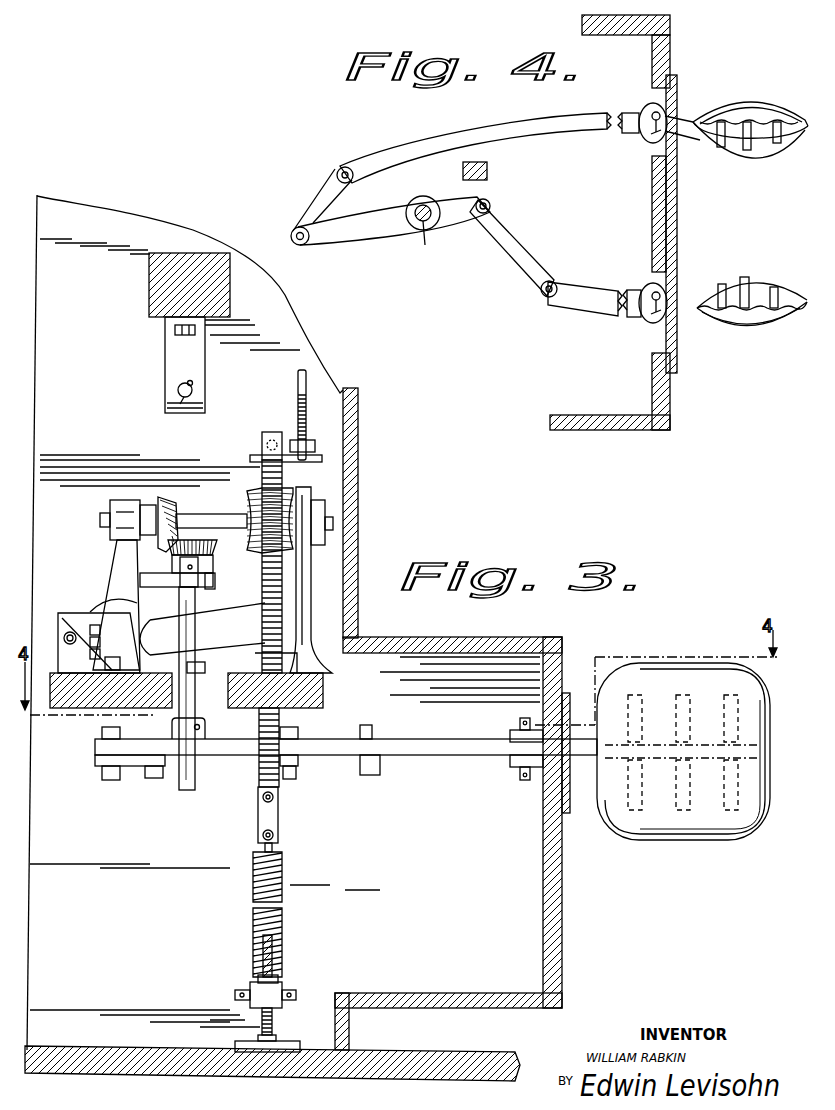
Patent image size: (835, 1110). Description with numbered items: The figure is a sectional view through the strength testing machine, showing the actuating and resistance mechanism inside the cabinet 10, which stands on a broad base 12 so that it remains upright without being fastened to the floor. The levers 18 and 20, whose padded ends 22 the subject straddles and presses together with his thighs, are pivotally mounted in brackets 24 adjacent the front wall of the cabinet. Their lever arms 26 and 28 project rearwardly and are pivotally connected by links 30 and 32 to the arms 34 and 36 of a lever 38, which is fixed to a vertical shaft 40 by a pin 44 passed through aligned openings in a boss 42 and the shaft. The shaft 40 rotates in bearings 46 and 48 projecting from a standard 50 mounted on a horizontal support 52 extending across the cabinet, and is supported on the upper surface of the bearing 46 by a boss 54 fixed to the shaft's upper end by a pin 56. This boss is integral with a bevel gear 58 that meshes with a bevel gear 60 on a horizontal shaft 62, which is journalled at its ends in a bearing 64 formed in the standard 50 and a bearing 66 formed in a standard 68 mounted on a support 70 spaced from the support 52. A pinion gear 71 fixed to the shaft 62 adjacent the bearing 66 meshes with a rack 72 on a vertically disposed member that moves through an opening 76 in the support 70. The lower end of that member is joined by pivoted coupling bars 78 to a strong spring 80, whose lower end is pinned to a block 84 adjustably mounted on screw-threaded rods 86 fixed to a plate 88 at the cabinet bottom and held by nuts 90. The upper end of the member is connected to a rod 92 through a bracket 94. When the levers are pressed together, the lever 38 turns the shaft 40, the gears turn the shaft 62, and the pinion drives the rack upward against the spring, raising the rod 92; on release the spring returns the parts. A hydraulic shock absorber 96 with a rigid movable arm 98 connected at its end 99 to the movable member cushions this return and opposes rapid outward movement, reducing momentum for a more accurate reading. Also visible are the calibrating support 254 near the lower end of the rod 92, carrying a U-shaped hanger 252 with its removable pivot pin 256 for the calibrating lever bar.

In FIG. 4, the cabinet 10 is at (632, 430).
In FIG. 3, the cabinet 10 is at (358, 437).
In FIG. 3, the base 12 is at (510, 1050).
In FIG. 4, the lever 18 is at (760, 286).
In FIG. 4, the lever 20 is at (760, 150).
In FIG. 4, the padded end 22 is at (757, 108).
In FIG. 3, the padded end 22 is at (725, 820).
In FIG. 4, the bracket 24 is at (648, 142).
In FIG. 3, the bracket 24 is at (510, 736).
In FIG. 4, the lever arm 26 is at (606, 312).
In FIG. 3, the lever arm 26 is at (420, 739).
In FIG. 4, the lever arm 28 is at (590, 126).
In FIG. 3, the lever arm 28 is at (340, 742).
In FIG. 4, the link 30 is at (518, 250).
In FIG. 3, the link 30 is at (338, 760).
In FIG. 4, the link 32 is at (322, 198).
In FIG. 3, the link 32 is at (97, 763).
In FIG. 4, the arm 34 is at (458, 214).
In FIG. 3, the arm 34 is at (234, 756).
In FIG. 4, the arm 36 is at (337, 240).
In FIG. 3, the arm 36 is at (137, 756).
In FIG. 4, the lever 38 is at (390, 240).
In FIG. 3, the lever 38 is at (95, 746).
In FIG. 4, the vertical shaft 40 is at (429, 242).
In FIG. 3, the vertical shaft 40 is at (186, 791).
In FIG. 4, the boss 42 is at (430, 203).
In FIG. 3, the boss 42 is at (206, 730).
In FIG. 4, the pin 44 is at (415, 207).
In FIG. 3, the pin 44 is at (197, 737).
In FIG. 3, the bearing 46 is at (217, 586).
In FIG. 3, the bearing 48 is at (206, 665).
In FIG. 3, the standard 50 is at (124, 571).
In FIG. 3, the horizontal support 52 is at (143, 703).
In FIG. 3, the boss 54 is at (214, 566).
In FIG. 3, the pin 56 is at (188, 572).
In FIG. 3, the bevel gear 58 is at (218, 545).
In FIG. 3, the bevel gear 60 is at (178, 497).
In FIG. 3, the horizontal shaft 62 is at (100, 520).
In FIG. 3, the bearing 64 is at (116, 501).
In FIG. 3, the bearing 66 is at (318, 502).
In FIG. 3, the standard 68 is at (305, 580).
In FIG. 4, the support 70 is at (488, 168).
In FIG. 3, the support 70 is at (325, 692).
In FIG. 3, the pinion gear 71 is at (262, 492).
In FIG. 3, the rack 72 is at (268, 604).
In FIG. 3, the opening 76 is at (306, 742).
In FIG. 3, the pivoted coupling bar 78 is at (280, 812).
In FIG. 3, the spring 80 is at (283, 866).
In FIG. 3, the block 84 is at (282, 993).
In FIG. 3, the screw-threaded rod 86 is at (283, 945).
In FIG. 3, the plate 88 is at (285, 1047).
In FIG. 3, the nut 90 is at (278, 980).
In FIG. 3, the rod 92 is at (306, 380).
In FIG. 3, the bracket 94 is at (262, 440).
In FIG. 3, the hydraulic shock absorber 96 is at (90, 616).
In FIG. 3, the movable arm 98 is at (208, 626).
In FIG. 3, the end portion 99 is at (290, 640).
In FIG. 3, the U-shaped hanger 252 is at (165, 366).
In FIG. 3, the support 254 is at (188, 253).
In FIG. 3, the pivot pin 256 is at (178, 390).